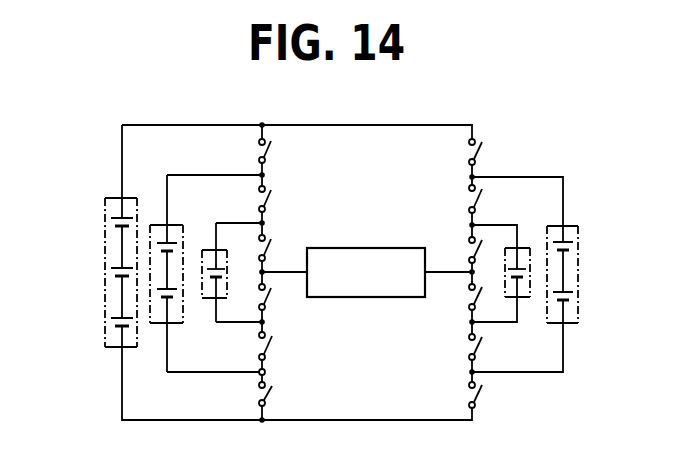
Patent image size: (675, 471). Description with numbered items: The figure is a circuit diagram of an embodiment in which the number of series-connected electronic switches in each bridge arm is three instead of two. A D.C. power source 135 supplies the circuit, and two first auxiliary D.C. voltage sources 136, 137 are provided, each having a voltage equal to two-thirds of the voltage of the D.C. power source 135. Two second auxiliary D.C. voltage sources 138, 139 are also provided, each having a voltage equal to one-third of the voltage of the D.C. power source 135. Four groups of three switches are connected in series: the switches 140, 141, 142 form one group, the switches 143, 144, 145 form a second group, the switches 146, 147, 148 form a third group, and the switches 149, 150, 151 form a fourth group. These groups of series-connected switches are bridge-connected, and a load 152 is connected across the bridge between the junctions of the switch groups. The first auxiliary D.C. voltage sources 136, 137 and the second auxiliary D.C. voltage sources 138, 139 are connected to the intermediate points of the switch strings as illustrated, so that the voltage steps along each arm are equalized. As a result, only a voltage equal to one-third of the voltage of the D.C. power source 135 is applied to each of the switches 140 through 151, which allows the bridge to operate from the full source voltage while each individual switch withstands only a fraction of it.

The D.C. power source 135 is at (112, 196).
The first auxiliary D.C. voltage source 136 is at (174, 223).
The first auxiliary D.C. voltage source 137 is at (575, 225).
The second auxiliary D.C. voltage source 138 is at (203, 298).
The second auxiliary D.C. voltage source 139 is at (522, 246).
The switch 140 is at (276, 152).
The switch 141 is at (274, 203).
The switch 142 is at (273, 243).
The switch 143 is at (277, 298).
The switch 144 is at (274, 345).
The switch 145 is at (276, 393).
The switch 146 is at (466, 157).
The switch 147 is at (468, 203).
The switch 148 is at (468, 246).
The switch 149 is at (467, 298).
The switch 150 is at (468, 343).
The switch 151 is at (469, 390).
The load 152 is at (366, 298).